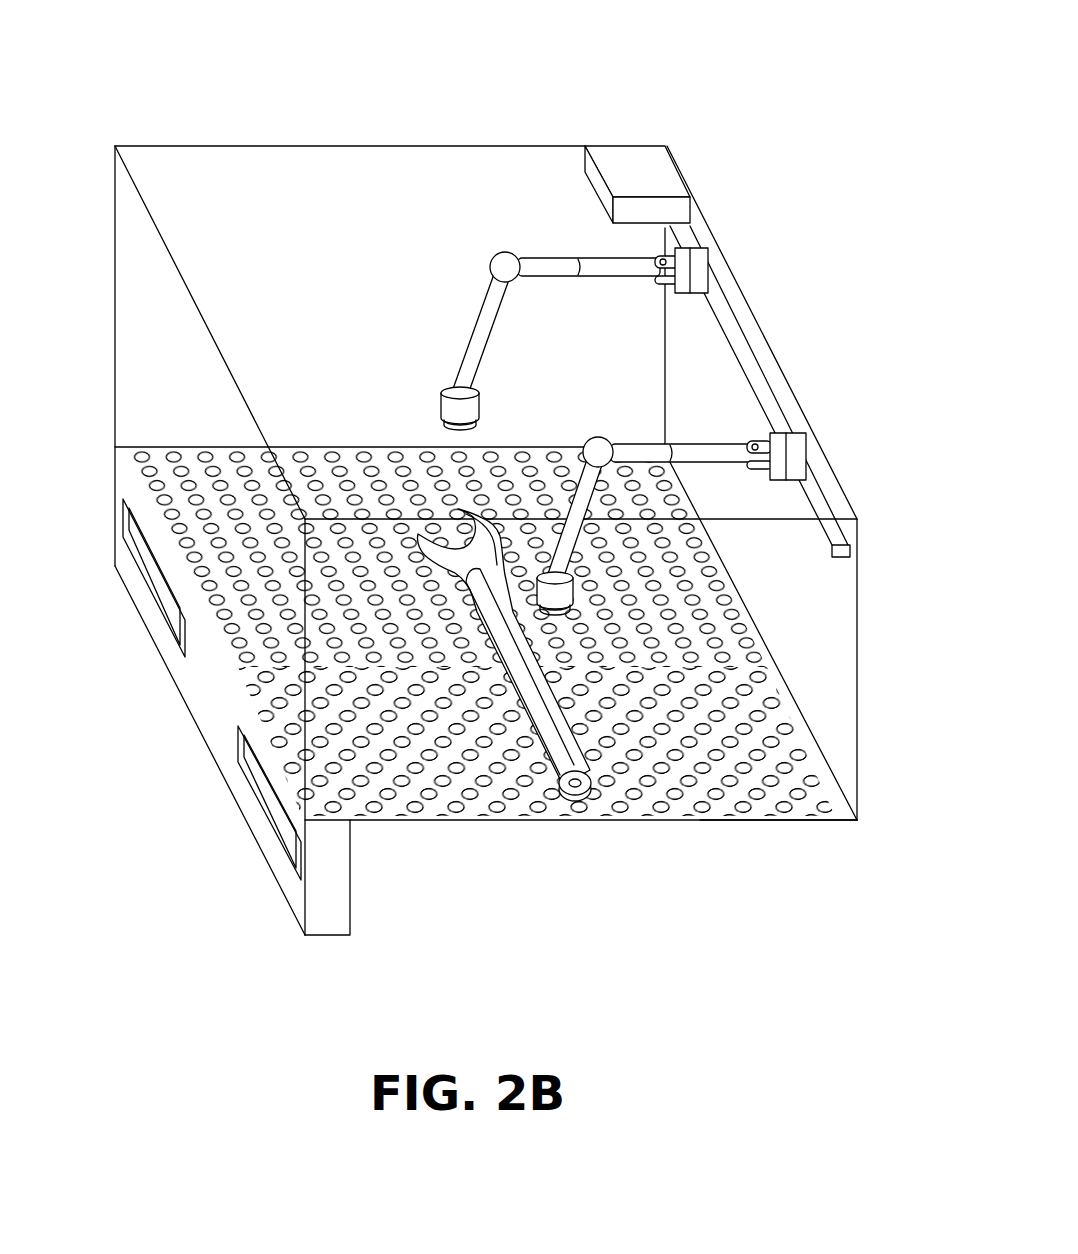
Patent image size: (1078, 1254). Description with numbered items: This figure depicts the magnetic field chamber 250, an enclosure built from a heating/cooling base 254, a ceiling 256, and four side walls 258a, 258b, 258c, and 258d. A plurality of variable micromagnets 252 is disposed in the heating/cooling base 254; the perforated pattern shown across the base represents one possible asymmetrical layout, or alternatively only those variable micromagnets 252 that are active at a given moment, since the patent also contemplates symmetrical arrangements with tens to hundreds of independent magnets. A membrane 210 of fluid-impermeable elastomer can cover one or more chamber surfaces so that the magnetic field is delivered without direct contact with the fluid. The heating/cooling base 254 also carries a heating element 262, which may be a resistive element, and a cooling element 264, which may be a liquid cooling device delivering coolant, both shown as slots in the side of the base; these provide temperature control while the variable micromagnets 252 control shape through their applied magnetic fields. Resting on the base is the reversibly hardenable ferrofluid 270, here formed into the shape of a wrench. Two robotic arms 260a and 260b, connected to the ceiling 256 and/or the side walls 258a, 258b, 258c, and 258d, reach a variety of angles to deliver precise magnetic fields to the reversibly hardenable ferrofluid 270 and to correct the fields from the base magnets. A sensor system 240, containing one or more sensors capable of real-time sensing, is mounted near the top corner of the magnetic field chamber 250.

The membrane 210 is at (815, 760).
The sensor system 240 is at (633, 163).
The magnetic field chamber 250 is at (790, 198).
The variable micromagnets 252 is at (415, 822).
The heating/cooling base 254 is at (780, 822).
The ceiling 256 is at (718, 375).
The side wall 258a is at (745, 423).
The side wall 258b is at (143, 336).
The side wall 258c is at (340, 170).
The side wall 258d is at (810, 640).
The robotic arm 260a is at (540, 263).
The robotic arm 260b is at (642, 443).
The heating element 262 is at (262, 797).
The cooling element 264 is at (148, 555).
The reversibly hardenable ferrofluid 270 is at (541, 745).